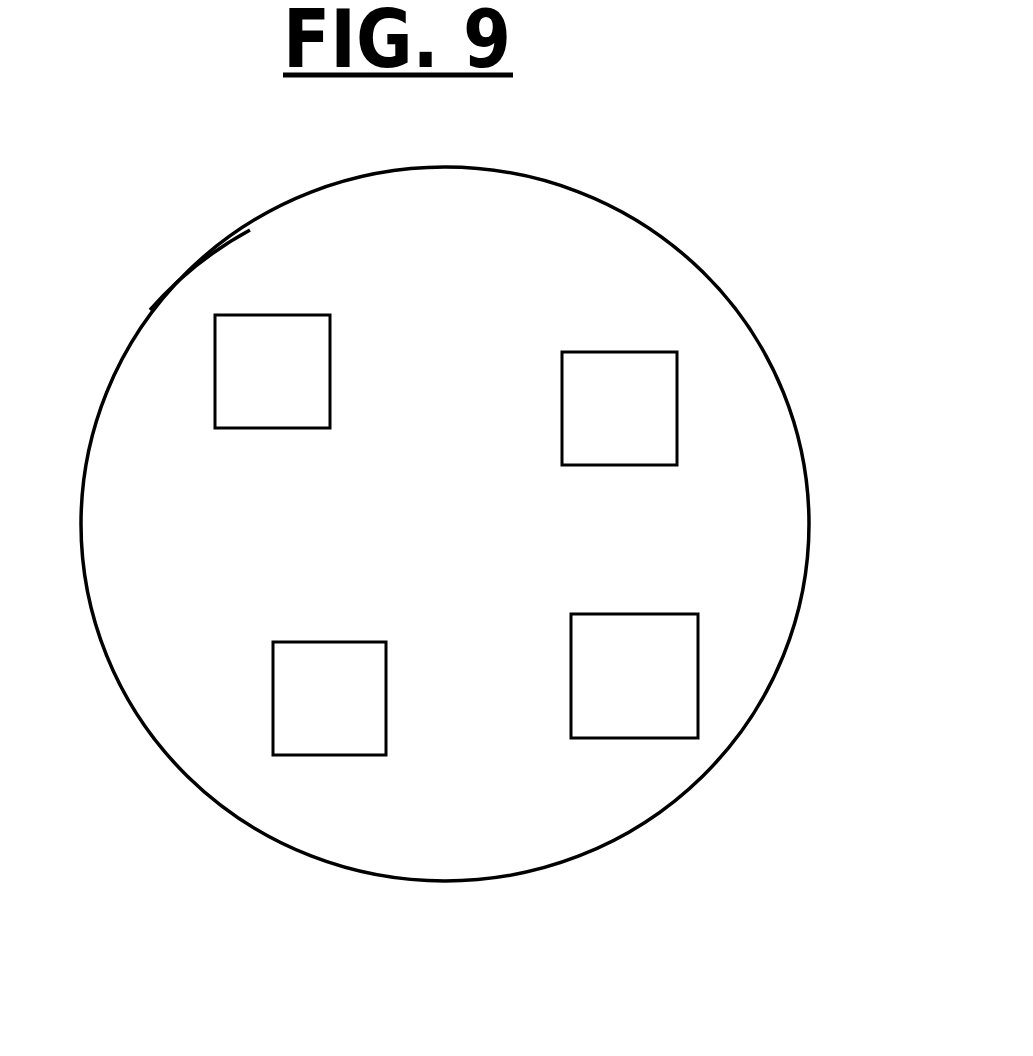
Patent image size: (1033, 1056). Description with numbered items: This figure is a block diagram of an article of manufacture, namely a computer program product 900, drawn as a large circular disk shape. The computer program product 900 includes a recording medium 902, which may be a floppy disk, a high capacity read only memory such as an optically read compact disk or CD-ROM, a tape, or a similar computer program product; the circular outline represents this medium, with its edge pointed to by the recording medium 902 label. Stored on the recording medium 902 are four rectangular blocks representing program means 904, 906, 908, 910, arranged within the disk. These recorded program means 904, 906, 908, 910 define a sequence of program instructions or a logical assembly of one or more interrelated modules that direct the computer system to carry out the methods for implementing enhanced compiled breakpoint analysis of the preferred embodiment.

The computer program product 900 is at (760, 278).
The recording medium 902 is at (132, 312).
The program means 904 is at (619, 408).
The program means 906 is at (634, 676).
The program means 908 is at (329, 698).
The program means 910 is at (272, 371).